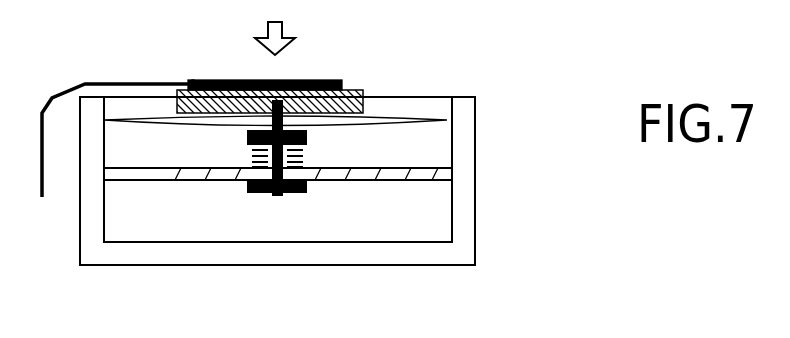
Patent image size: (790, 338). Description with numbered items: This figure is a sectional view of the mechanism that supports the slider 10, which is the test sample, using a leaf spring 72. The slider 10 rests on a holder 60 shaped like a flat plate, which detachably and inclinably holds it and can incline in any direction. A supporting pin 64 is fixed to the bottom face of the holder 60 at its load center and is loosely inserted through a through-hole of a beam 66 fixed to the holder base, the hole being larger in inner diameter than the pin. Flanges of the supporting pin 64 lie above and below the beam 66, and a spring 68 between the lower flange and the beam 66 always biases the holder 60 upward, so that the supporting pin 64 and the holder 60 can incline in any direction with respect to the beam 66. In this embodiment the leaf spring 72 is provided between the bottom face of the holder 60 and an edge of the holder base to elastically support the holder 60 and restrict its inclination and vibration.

The slider 10 is at (323, 80).
The holder 60 is at (345, 88).
The leaf spring 72 is at (447, 120).
The beam 66 is at (120, 177).
The spring 68 is at (295, 157).
The supporting pin 64 is at (278, 195).